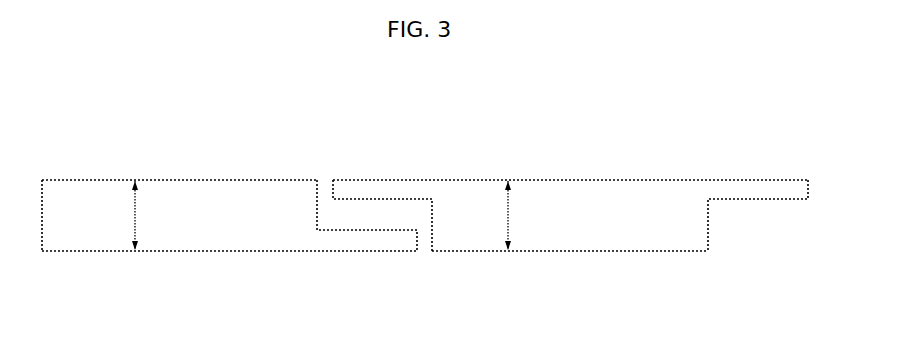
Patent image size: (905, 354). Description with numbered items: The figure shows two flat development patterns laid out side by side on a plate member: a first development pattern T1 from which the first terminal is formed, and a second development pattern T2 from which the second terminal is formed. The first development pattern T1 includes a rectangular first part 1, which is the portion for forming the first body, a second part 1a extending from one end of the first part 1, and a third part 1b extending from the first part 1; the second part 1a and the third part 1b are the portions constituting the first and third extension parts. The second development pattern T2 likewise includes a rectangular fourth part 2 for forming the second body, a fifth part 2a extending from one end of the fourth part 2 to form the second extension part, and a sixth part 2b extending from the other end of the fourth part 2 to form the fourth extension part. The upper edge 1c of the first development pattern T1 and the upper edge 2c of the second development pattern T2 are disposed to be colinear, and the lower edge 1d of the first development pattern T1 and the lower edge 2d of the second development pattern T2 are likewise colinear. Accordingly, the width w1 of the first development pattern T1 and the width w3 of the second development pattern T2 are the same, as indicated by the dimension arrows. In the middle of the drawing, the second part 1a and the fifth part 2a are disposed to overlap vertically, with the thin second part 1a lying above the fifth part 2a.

The first part 1 is at (570, 217).
The second part 1a is at (388, 192).
The third part 1b is at (760, 190).
The upper edge 1c is at (630, 178).
The lower edge 1d is at (630, 252).
The fourth part 2 is at (229, 217).
The fifth part 2a is at (375, 243).
The sixth part 2b is at (60, 242).
The upper edge 2c is at (250, 180).
The lower edge 2d is at (227, 252).
The first development pattern T1 is at (692, 162).
The second development pattern T2 is at (90, 167).
The width of the first development pattern w1 is at (527, 215).
The width of the second development pattern w3 is at (153, 215).